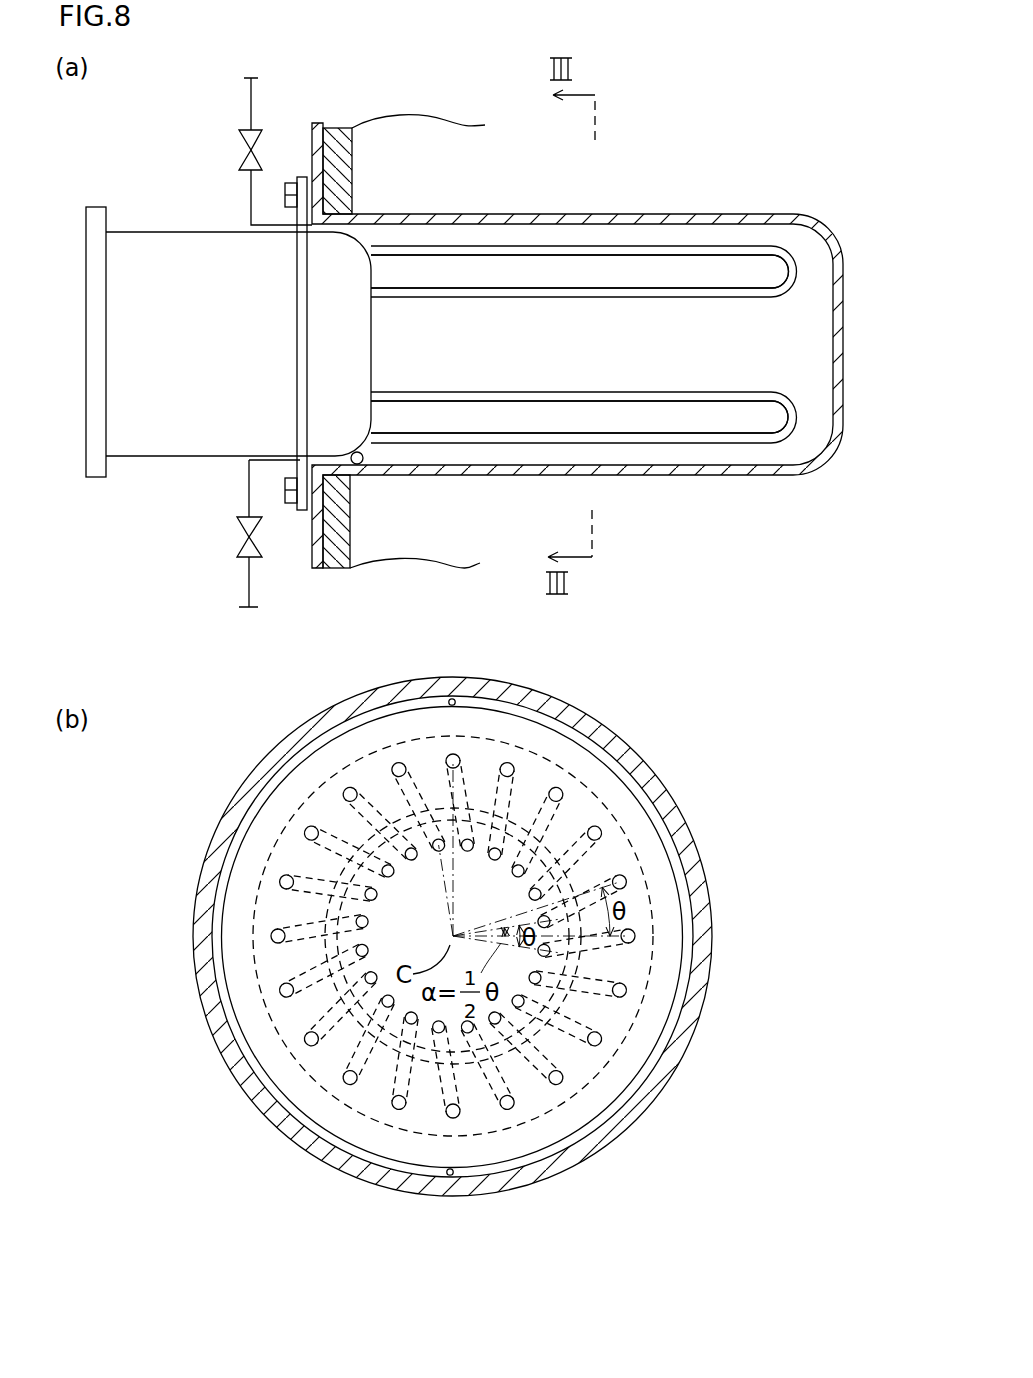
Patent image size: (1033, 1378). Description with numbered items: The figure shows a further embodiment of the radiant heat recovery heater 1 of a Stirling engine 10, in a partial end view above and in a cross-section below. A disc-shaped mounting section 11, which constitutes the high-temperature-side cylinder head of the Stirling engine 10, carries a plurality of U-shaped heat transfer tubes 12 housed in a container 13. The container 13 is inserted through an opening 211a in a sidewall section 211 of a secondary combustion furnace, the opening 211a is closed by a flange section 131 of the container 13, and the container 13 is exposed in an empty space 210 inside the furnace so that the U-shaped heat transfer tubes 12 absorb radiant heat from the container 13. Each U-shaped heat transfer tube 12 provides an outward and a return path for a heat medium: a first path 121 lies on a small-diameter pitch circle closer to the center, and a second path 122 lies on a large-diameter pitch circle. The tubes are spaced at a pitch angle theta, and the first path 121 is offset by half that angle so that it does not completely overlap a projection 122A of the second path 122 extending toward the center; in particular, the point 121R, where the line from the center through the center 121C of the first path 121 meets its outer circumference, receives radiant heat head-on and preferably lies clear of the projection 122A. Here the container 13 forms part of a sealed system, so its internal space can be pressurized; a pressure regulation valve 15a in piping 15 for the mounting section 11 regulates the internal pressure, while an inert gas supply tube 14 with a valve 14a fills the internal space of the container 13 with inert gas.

The radiant heat recovery heater 1 is at (695, 214).
The Stirling engine 10 is at (114, 115).
The mounting section 11 is at (350, 335).
The U-shaped heat transfer tube 12 is at (445, 246).
The first path 121 is at (607, 292).
The point 121R is at (435, 840).
The center of the first path 121C is at (432, 850).
The second path 122 is at (516, 253).
The projection of the second path 122A is at (458, 868).
The container 13 is at (752, 214).
The flange section 131 is at (353, 521).
The inert gas supply tube 14 is at (246, 482).
The valve 14a is at (238, 528).
The piping 15 is at (246, 195).
The pressure regulation valve 15a is at (240, 137).
The empty space 210 is at (383, 147).
The sidewall section 211 is at (342, 177).
The opening 211a is at (352, 460).